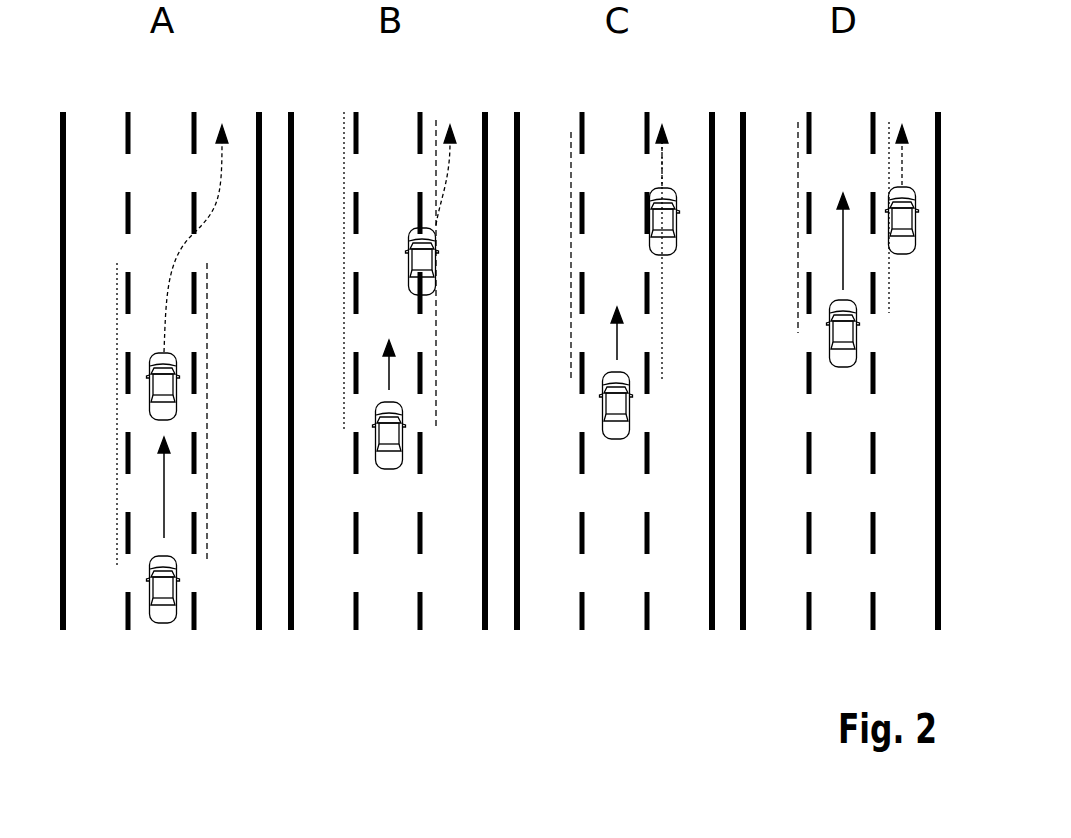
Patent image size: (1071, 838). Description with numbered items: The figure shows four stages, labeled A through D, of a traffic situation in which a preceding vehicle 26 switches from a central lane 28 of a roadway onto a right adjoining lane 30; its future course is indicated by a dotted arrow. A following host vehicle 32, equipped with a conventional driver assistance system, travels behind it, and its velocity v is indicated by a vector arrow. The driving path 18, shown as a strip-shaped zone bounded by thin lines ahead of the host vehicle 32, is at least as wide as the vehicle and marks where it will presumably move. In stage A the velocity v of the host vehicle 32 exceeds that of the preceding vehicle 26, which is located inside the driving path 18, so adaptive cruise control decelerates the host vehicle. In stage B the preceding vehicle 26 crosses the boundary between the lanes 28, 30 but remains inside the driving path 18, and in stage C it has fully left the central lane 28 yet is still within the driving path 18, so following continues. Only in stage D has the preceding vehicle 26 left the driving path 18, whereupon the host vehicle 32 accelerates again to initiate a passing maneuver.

The driving path 18 is at (117, 530).
The preceding vehicle 26 is at (150, 363).
The central lane 28 is at (158, 123).
The right adjoining lane 30 is at (215, 123).
The host vehicle 32 is at (164, 622).
The velocity v is at (164, 500).